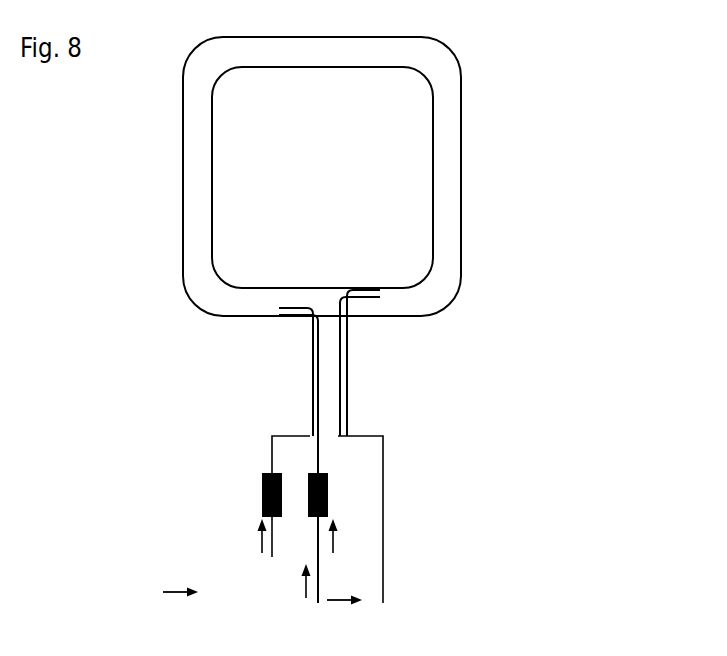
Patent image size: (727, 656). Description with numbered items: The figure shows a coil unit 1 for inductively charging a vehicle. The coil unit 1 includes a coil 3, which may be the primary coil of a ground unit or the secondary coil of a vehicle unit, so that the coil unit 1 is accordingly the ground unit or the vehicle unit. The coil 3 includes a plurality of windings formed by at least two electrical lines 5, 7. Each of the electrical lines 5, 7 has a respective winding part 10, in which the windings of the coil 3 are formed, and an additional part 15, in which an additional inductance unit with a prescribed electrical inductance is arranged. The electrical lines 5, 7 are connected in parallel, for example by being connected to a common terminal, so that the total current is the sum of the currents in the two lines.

The coil unit 1 is at (391, 216).
The coil 3 is at (318, 177).
The winding part 10 is at (500, 365).
The electrical line 7 is at (312, 377).
The electrical line 5 is at (313, 428).
The additional part 15 is at (210, 446).